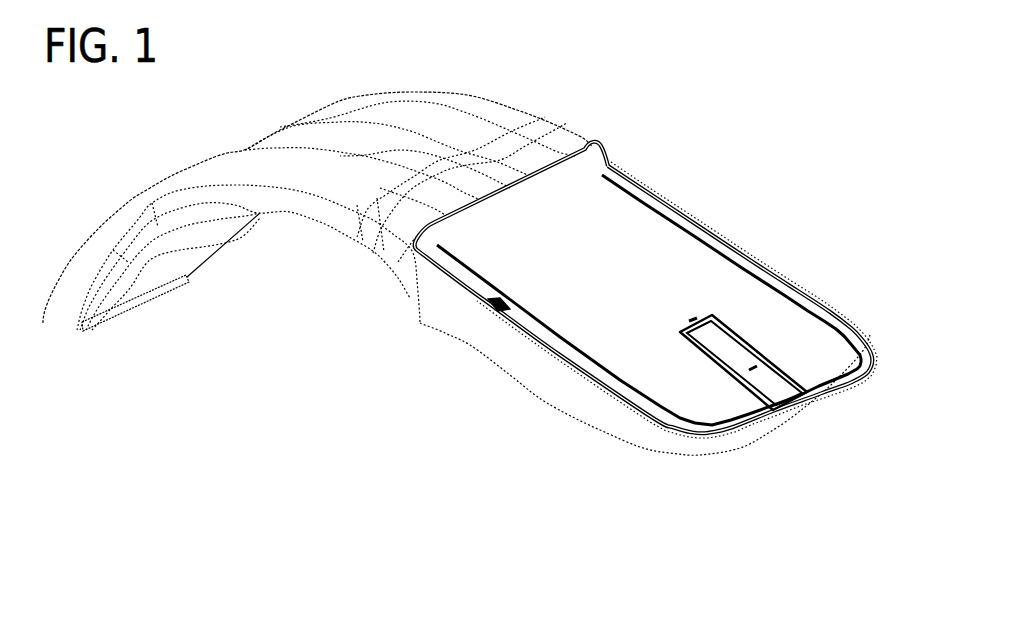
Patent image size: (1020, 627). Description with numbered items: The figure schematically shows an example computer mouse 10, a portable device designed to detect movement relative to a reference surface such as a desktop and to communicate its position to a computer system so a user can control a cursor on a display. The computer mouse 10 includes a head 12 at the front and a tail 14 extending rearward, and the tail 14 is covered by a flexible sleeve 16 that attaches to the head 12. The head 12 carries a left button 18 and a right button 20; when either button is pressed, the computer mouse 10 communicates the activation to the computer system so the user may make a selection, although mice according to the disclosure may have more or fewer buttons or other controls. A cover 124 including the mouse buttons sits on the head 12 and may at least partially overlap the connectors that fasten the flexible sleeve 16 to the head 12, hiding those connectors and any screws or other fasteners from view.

The computer mouse 10 is at (460, 250).
The head 12 is at (797, 284).
The tail 14 is at (297, 84).
The flexible sleeve 16 is at (428, 91).
The left button 18 is at (759, 362).
The right button 20 is at (697, 405).
The cover 124 is at (516, 207).